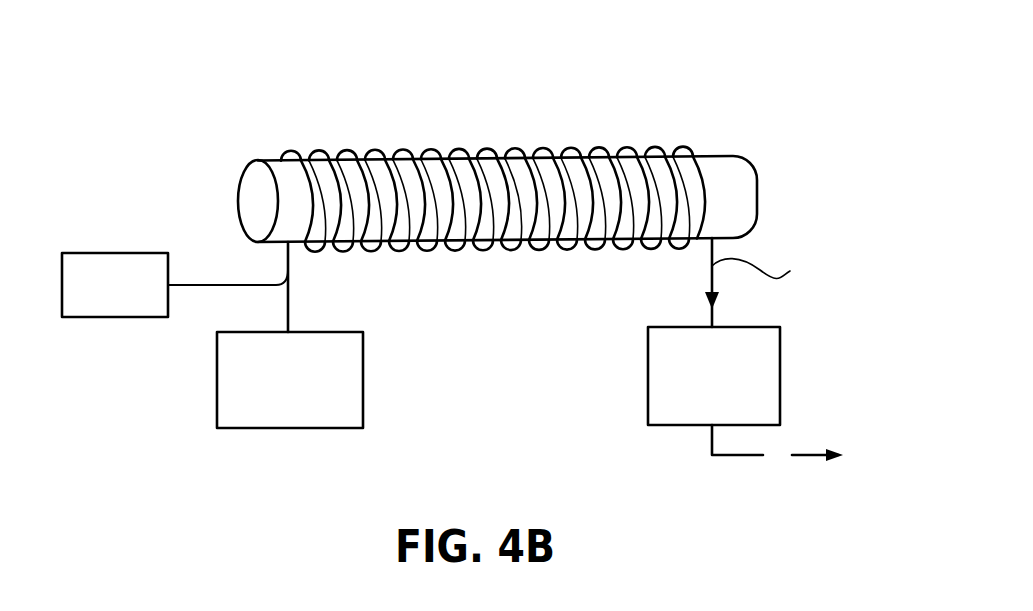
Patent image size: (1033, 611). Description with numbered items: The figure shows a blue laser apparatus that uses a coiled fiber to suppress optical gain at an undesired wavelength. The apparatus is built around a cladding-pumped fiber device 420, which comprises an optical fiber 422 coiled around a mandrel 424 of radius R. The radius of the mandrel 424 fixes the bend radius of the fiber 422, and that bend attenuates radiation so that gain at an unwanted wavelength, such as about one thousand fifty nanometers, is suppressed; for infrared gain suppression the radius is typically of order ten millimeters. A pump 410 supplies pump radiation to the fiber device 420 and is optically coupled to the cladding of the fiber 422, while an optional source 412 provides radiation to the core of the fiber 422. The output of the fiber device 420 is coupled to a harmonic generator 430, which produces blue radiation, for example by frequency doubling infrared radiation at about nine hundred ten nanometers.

The pump 410 is at (117, 252).
The optional source 412 is at (314, 422).
The cladding-pumped fiber device 420 is at (680, 114).
The optical fiber 422 is at (288, 305).
The mandrel 424 is at (757, 173).
The harmonic generator 430 is at (740, 416).